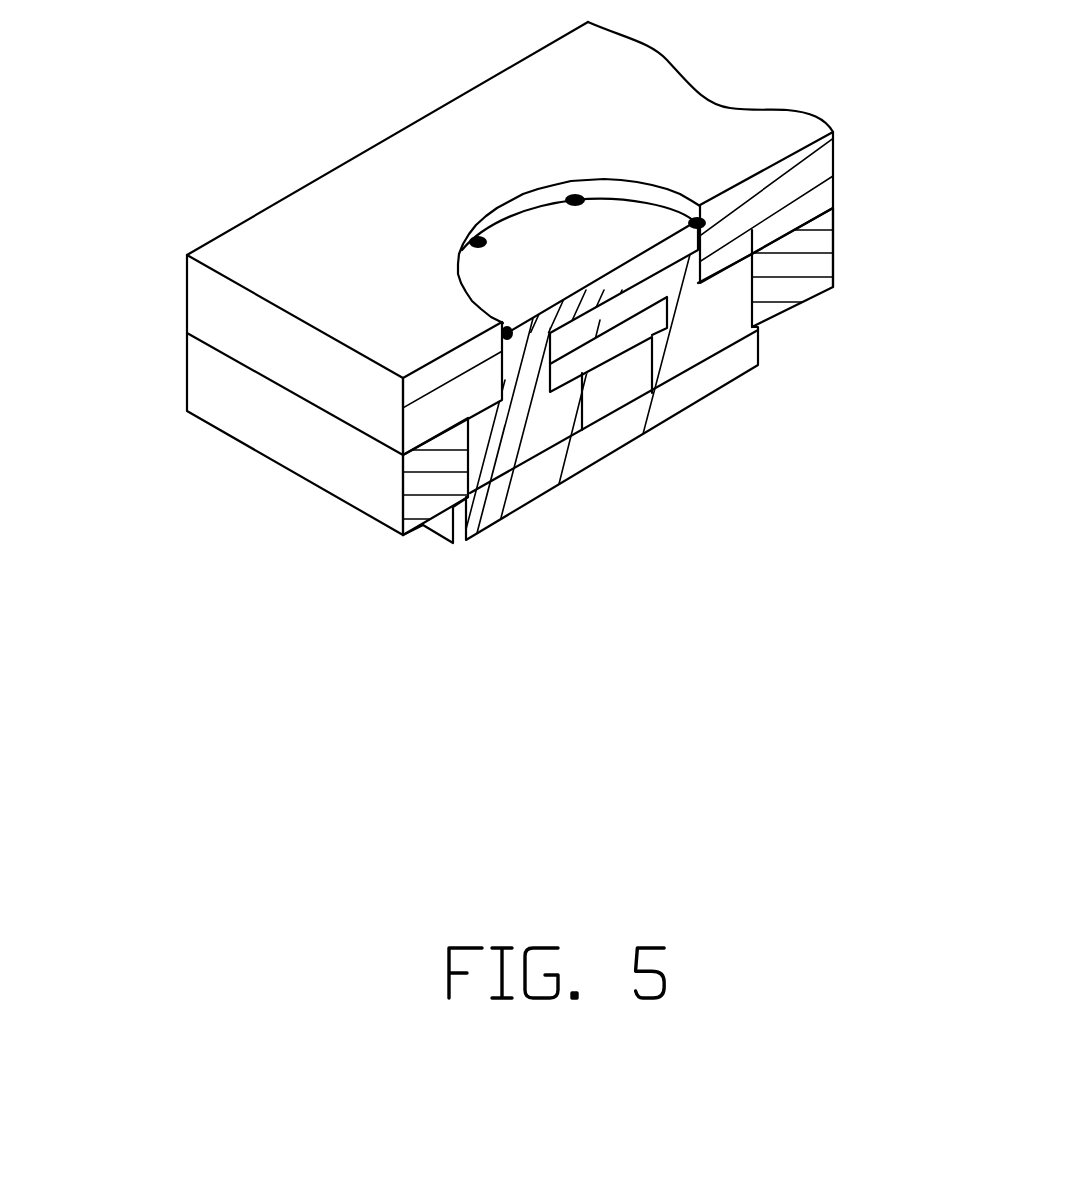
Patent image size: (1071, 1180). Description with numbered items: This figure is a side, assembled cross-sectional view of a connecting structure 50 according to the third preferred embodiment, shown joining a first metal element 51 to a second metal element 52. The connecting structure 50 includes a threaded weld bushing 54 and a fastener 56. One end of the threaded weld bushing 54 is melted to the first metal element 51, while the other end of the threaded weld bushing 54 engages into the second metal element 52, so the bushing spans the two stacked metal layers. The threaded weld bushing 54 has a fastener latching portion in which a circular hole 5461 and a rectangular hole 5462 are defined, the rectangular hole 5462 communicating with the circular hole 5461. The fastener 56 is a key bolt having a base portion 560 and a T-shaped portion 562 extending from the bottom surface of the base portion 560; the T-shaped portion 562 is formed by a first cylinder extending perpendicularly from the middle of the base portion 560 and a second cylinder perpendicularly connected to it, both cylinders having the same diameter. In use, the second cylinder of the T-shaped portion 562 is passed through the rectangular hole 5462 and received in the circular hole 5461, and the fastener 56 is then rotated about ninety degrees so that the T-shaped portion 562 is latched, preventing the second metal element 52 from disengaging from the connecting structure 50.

The connecting structure 50 is at (748, 614).
The first metal element 51 is at (225, 312).
The second metal element 52 is at (427, 487).
The threaded weld bushing 54 is at (462, 545).
The fastener 56 is at (772, 502).
The base portion 560 is at (490, 497).
The T-shaped portion 562 is at (657, 345).
The circular hole 5461 is at (670, 300).
The rectangular hole 5462 is at (655, 357).